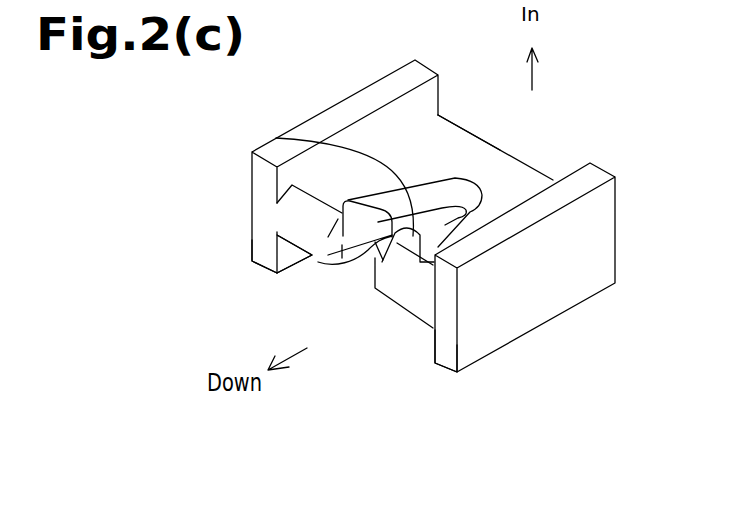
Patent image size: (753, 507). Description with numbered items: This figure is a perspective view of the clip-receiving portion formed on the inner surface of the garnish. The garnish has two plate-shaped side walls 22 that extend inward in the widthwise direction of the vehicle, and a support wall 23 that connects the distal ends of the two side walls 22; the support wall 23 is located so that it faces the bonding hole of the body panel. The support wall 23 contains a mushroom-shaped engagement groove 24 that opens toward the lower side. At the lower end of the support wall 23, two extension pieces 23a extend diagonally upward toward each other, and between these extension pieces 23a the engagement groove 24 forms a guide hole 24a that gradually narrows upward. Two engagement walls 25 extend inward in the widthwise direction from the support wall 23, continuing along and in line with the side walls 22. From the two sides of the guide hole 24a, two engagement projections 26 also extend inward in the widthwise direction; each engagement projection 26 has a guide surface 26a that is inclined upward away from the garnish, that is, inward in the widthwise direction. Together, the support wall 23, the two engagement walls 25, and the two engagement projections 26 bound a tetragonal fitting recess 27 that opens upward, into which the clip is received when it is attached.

The side wall 22 is at (262, 252).
The support wall 23 is at (518, 176).
The extension piece 23a is at (378, 214).
The engagement groove 24 is at (458, 197).
The guide hole 24a is at (370, 258).
The engagement wall 25 is at (385, 87).
The engagement projection 26 is at (316, 258).
The guide surface 26a is at (292, 194).
The fitting recess 27 is at (458, 136).